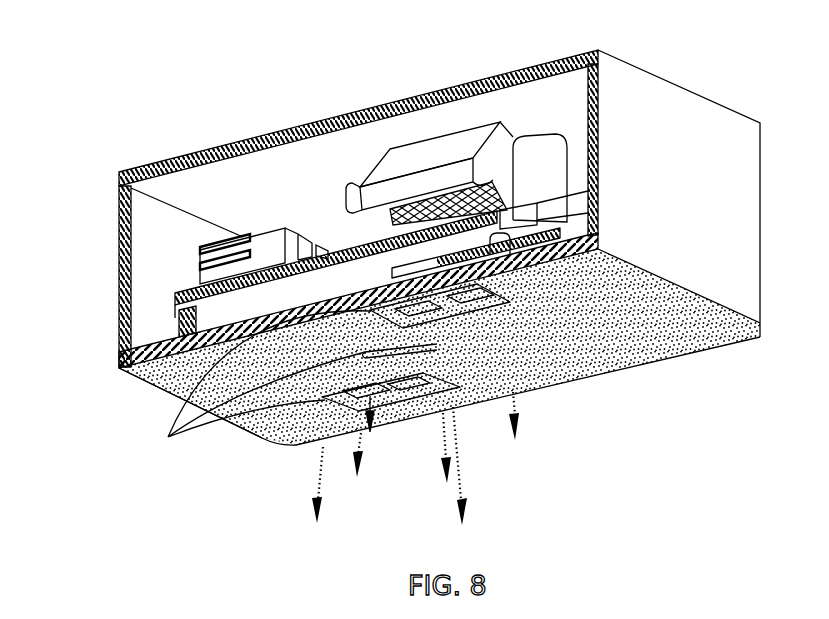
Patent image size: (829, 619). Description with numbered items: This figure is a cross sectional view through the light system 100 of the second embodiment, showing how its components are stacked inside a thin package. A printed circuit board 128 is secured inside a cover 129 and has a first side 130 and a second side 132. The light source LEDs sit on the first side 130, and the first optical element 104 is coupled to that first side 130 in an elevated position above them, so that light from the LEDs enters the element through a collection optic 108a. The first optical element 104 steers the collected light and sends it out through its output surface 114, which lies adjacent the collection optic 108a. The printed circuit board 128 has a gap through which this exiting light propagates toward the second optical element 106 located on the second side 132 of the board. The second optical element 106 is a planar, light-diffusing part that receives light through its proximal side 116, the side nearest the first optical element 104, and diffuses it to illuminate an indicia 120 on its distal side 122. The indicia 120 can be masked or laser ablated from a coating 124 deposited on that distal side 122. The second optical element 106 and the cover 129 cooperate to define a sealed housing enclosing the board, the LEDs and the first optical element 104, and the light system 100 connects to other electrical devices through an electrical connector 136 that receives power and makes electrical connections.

The light system 100 is at (142, 56).
The first optical element 104 is at (497, 157).
The second optical element 106 is at (119, 363).
The collection optic 108a is at (350, 210).
The output surface 114 is at (517, 177).
The proximal side 116 is at (119, 338).
The indicia 120 is at (329, 404).
The distal side 122 is at (254, 432).
The coating 124 is at (636, 340).
The printed circuit board 128 is at (175, 300).
The cover 129 is at (690, 88).
The first side 130 is at (177, 276).
The second side 132 is at (228, 338).
The electrical connector 136 is at (213, 247).